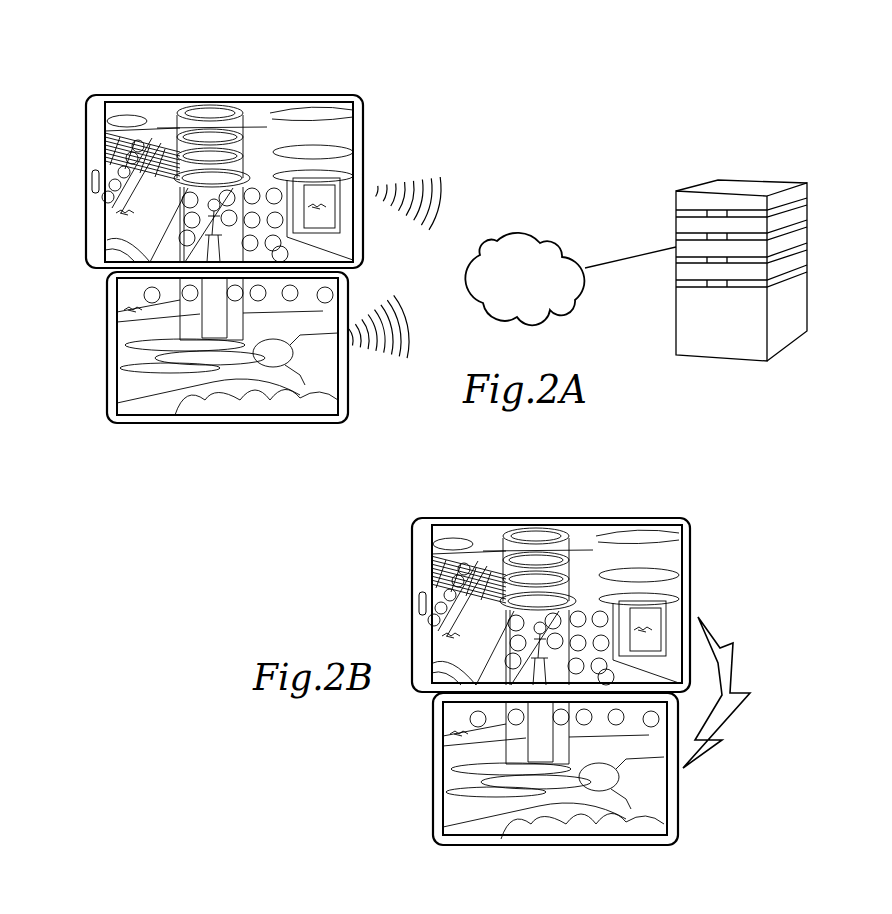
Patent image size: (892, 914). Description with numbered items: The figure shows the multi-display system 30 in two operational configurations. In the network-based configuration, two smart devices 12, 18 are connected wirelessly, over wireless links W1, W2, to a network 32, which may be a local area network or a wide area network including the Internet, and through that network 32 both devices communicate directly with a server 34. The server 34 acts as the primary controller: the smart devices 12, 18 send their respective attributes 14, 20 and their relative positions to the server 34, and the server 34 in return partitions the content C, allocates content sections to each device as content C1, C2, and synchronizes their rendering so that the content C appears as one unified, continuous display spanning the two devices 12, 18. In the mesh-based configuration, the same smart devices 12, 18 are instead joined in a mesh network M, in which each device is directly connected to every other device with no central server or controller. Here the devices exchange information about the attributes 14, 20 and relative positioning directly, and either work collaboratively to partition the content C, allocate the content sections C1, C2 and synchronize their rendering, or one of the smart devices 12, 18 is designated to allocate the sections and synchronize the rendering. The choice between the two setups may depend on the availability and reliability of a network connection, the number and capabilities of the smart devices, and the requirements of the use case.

In FIG. 2A, the smart device 12 is at (131, 426).
In FIG. 2B, the smart device 12 is at (430, 752).
In FIG. 2A, the attribute 14 is at (206, 418).
In FIG. 2B, the attribute 14 is at (532, 845).
In FIG. 2A, the smart device 18 is at (118, 93).
In FIG. 2B, the smart device 18 is at (410, 545).
In FIG. 2A, the attribute 20 is at (235, 100).
In FIG. 2B, the attribute 20 is at (561, 518).
In FIG. 2A, the system 30 is at (598, 136).
In FIG. 2A, the network 32 is at (540, 237).
In FIG. 2A, the server 34 is at (738, 190).
In FIG. 2A, the content C is at (330, 118).
In FIG. 2B, the content C is at (655, 540).
In FIG. 2A, the content section C1 is at (118, 363).
In FIG. 2B, the content section C1 is at (455, 787).
In FIG. 2A, the content section C2 is at (112, 150).
In FIG. 2B, the content section C2 is at (442, 573).
In FIG. 2A, the first wireless signal W1 is at (410, 333).
In FIG. 2A, the second wireless signal W2 is at (441, 203).
In FIG. 2B, the mesh network M is at (730, 678).